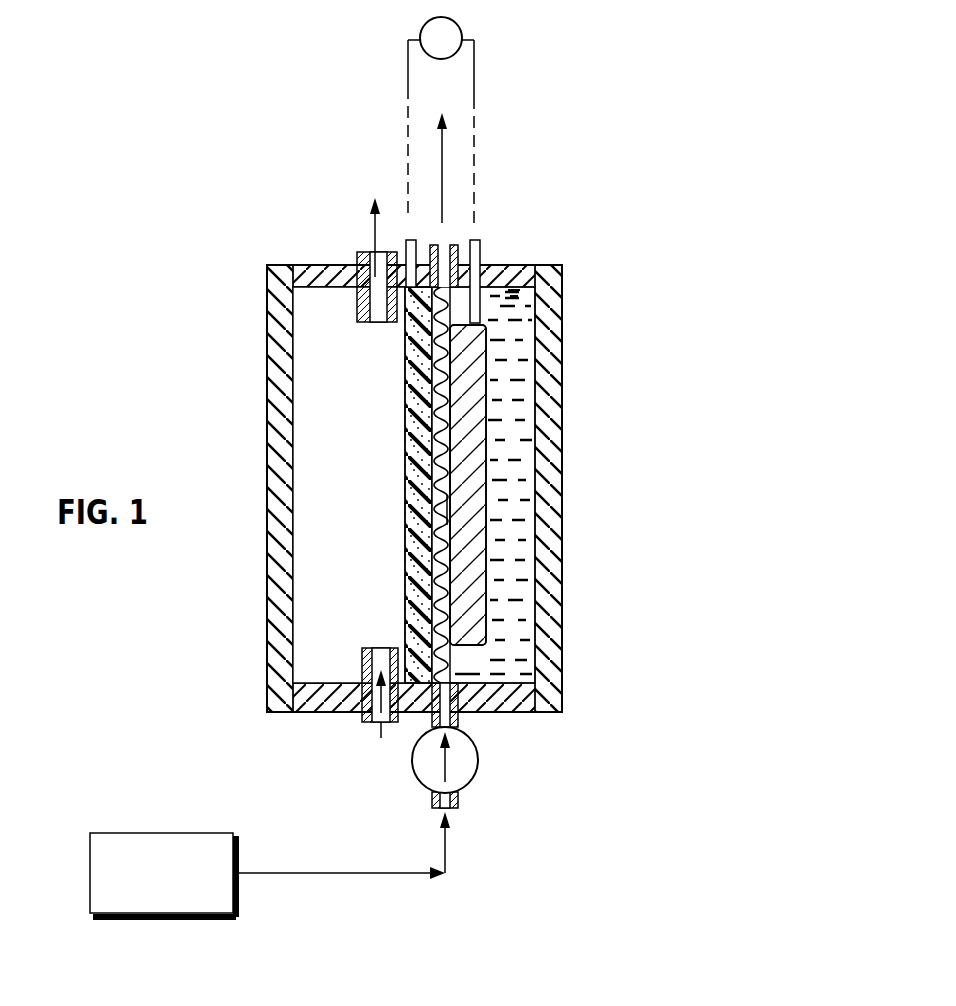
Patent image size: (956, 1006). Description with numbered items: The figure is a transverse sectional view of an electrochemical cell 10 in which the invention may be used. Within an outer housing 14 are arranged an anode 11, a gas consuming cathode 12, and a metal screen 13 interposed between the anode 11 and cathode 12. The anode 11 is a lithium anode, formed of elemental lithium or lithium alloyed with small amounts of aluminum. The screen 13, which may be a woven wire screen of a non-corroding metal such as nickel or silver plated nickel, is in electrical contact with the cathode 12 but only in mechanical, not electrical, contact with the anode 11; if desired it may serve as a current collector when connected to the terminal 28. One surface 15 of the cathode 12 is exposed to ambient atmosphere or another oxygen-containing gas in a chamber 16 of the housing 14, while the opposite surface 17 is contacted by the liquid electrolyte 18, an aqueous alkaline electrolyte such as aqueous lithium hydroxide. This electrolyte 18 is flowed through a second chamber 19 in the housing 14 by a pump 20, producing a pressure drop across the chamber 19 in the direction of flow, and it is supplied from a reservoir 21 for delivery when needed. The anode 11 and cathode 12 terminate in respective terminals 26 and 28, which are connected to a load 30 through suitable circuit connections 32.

The electrochemical cell 10 is at (425, 425).
The anode 11 is at (468, 440).
The gas consuming cathode 12 is at (430, 375).
The metal screen 13 is at (450, 385).
The outer housing 14 is at (558, 560).
The cathode surface 15 is at (420, 430).
The chamber 16 is at (302, 499).
The opposite cathode surface 17 is at (448, 510).
The liquid electrolyte 18 is at (518, 323).
The second chamber 19 is at (515, 287).
The pump 20 is at (478, 767).
The reservoir 21 is at (130, 830).
The terminal 26 is at (475, 238).
The terminal 28 is at (411, 238).
The load 30 is at (460, 26).
The circuit connections 32 is at (408, 88).